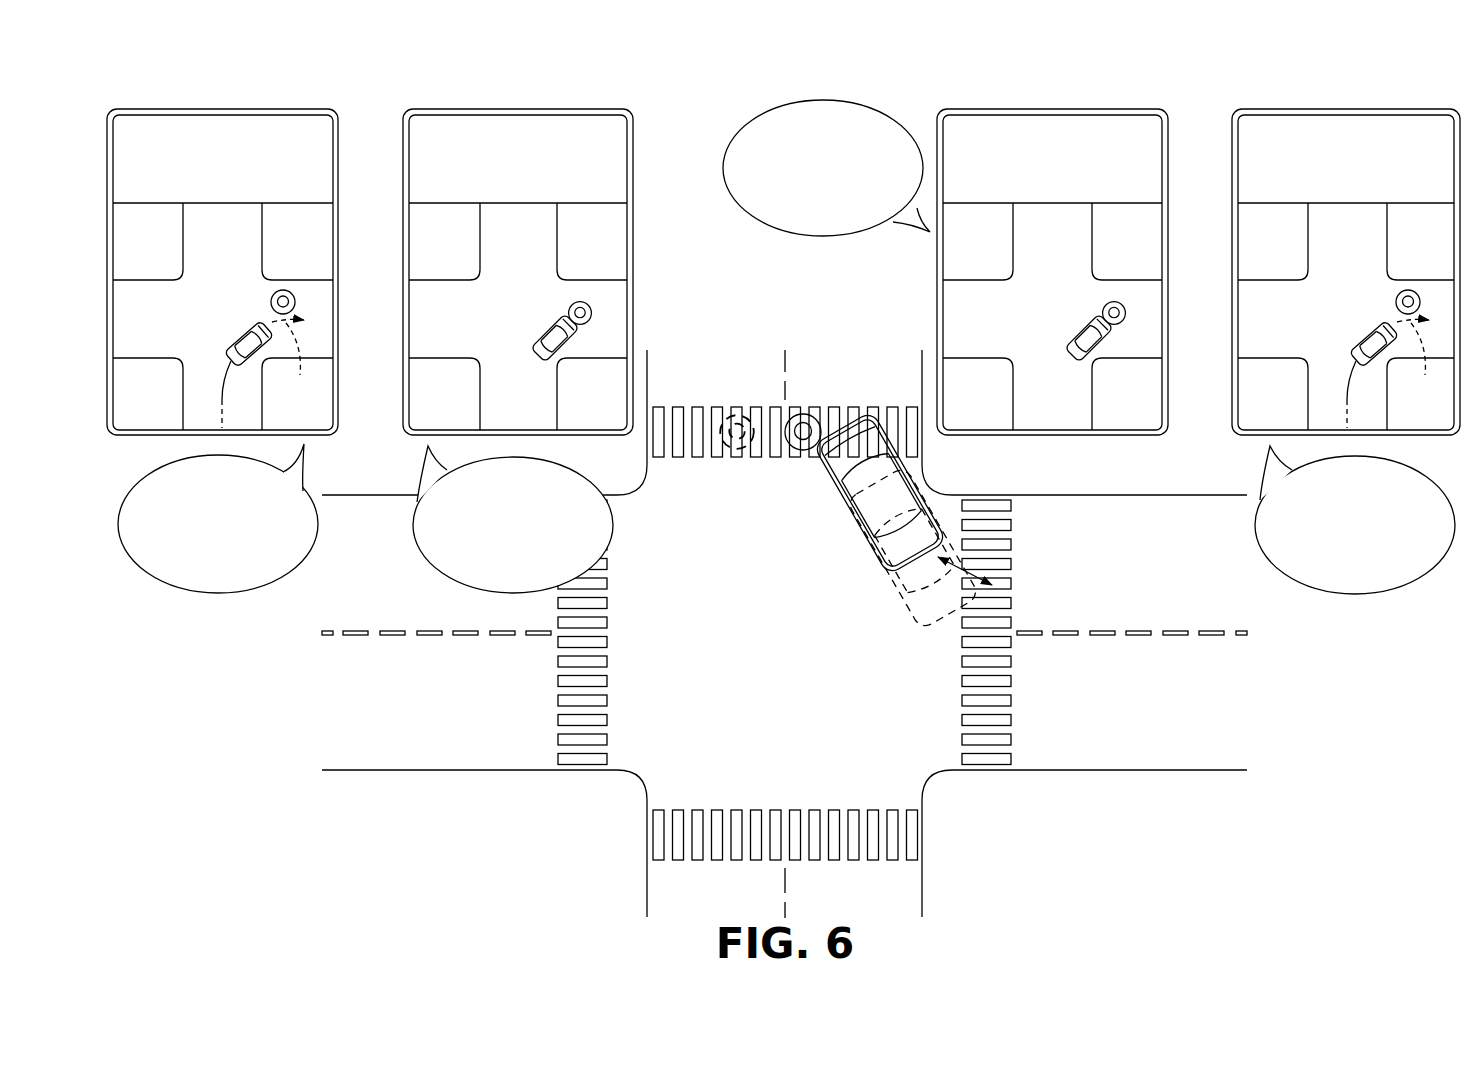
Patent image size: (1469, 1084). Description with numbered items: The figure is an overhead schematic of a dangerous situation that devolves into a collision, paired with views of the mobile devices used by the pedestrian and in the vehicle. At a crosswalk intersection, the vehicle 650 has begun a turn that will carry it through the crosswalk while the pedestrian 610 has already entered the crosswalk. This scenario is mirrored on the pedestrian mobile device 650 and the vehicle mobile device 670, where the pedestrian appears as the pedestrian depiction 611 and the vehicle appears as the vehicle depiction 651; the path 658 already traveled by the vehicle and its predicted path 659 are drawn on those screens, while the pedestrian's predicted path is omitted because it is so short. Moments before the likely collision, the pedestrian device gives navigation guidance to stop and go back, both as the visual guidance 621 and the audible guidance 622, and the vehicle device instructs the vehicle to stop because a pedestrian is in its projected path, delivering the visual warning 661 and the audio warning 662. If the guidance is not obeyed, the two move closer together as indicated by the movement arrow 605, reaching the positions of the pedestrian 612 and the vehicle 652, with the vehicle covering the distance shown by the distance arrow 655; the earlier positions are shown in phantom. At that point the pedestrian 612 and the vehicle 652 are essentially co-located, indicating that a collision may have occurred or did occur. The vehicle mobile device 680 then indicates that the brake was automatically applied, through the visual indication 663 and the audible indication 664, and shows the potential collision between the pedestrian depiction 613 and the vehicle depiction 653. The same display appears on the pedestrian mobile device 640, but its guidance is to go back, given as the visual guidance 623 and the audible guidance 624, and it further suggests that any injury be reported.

The movement arrow 605 is at (342, 252).
The pedestrian 610 is at (740, 458).
The pedestrian depiction 611 is at (270, 295).
The pedestrian position 612 is at (815, 412).
The pedestrian depiction 613 is at (568, 308).
The visual guidance 621 is at (287, 125).
The audible guidance 622 is at (216, 594).
The visual guidance 623 is at (598, 125).
The audible guidance 624 is at (512, 593).
The mobile device 640 is at (515, 108).
The vehicle / pedestrian mobile device 650 is at (916, 590).
The vehicle depiction 651 is at (233, 338).
The vehicle position 652 is at (835, 483).
The vehicle depiction 653 is at (538, 335).
The distance arrow 655 is at (1000, 567).
The path 658 is at (222, 402).
The predicted path 659 is at (860, 361).
The visual warning 661 is at (1282, 125).
The audio warning 662 is at (1355, 594).
The visual indication 663 is at (1006, 125).
The audio indication 664 is at (880, 104).
The vehicle mobile device 670 is at (1345, 108).
The mobile device 680 is at (1050, 108).